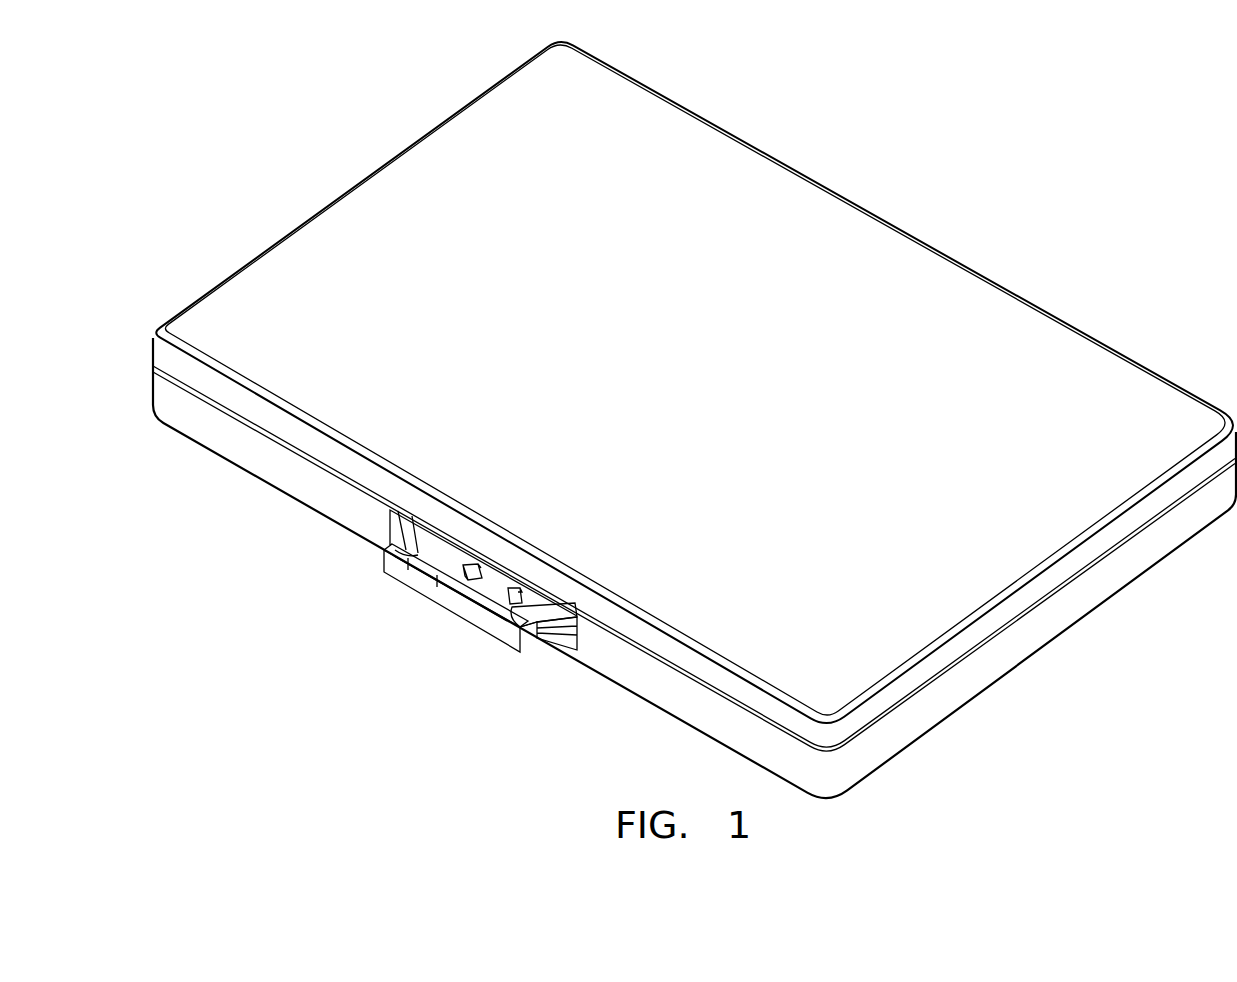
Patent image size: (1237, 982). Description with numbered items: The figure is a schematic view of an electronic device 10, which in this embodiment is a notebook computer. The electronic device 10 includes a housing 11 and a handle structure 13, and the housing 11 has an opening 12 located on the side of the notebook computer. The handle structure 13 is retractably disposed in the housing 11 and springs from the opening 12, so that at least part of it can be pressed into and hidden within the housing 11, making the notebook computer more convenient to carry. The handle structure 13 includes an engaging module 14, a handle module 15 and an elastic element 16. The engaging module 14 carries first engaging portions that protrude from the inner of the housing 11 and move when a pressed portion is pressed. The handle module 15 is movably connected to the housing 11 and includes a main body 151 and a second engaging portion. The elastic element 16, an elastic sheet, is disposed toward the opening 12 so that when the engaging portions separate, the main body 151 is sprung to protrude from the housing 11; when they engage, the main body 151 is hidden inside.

The electronic device 10 is at (295, 88).
The housing 11 is at (588, 139).
The opening 12 is at (389, 528).
The handle structure 13 is at (477, 618).
The engaging module 14 is at (470, 573).
The handle module 15 is at (537, 642).
The main body 151 is at (538, 638).
The elastic element 16 is at (530, 592).